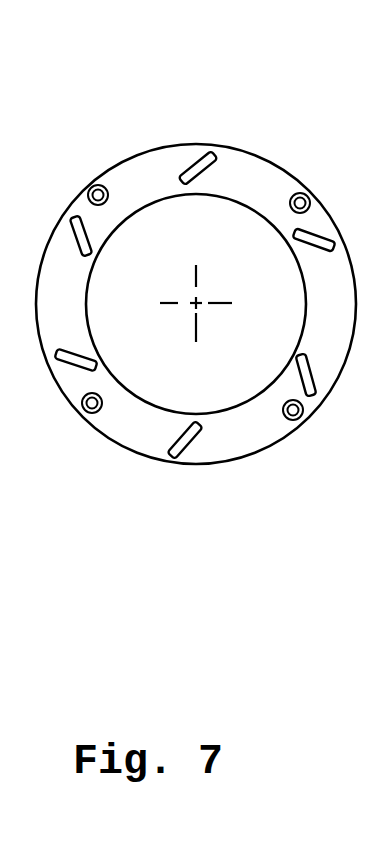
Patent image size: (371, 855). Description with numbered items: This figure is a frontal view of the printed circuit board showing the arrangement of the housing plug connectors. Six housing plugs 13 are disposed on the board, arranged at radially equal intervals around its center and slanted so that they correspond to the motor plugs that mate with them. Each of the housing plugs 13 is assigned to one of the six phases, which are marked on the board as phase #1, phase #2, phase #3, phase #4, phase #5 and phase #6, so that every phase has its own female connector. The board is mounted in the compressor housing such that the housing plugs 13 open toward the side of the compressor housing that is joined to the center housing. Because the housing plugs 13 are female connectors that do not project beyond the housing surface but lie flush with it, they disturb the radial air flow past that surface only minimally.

The housing plug 13 is at (178, 319).
The phase # 1 is at (197, 197).
The phase # 2 is at (289, 258).
The phase # 3 is at (277, 367).
The phase # 4 is at (165, 462).
The phase # 5 is at (101, 356).
The phase # 6 is at (105, 249).